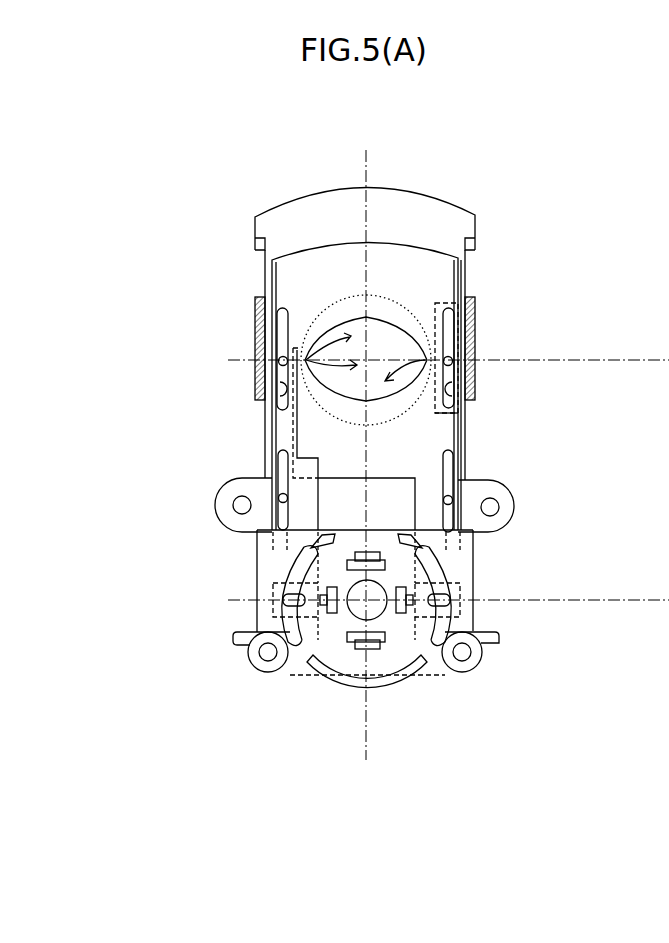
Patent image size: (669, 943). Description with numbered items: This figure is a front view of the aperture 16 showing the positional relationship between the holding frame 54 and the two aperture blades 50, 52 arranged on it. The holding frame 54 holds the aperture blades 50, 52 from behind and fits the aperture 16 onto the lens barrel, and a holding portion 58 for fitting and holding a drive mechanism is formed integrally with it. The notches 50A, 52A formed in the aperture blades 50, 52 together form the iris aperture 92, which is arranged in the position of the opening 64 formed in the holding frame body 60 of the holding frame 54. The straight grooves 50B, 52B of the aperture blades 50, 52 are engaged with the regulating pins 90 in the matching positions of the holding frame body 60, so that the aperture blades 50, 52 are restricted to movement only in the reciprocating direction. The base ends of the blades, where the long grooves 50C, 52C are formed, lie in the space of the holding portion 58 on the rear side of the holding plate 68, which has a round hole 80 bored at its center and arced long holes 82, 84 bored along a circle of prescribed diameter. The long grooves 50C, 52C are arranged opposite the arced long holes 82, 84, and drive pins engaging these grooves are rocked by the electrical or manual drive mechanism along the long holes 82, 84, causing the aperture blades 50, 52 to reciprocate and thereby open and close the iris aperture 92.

The aperture 16 is at (548, 192).
The holding frame 54 is at (398, 216).
The opening 64 is at (433, 330).
The iris aperture 92 is at (303, 360).
The notch 52A is at (300, 356).
The notch 50A is at (450, 354).
The regulating pins 90 is at (280, 361).
The straight grooves 52B is at (280, 396).
The straight grooves 50B is at (452, 391).
The holding frame body 60 is at (548, 426).
The holding portion 58 is at (184, 582).
The aperture blade 52 is at (282, 575).
The aperture blade 50 is at (455, 568).
The long groove 52C is at (290, 597).
The long groove 50C is at (468, 604).
The round hole 80 is at (377, 614).
The holding plate 68 is at (400, 632).
The arced long hole 82 is at (480, 633).
The arced long hole 84 is at (265, 660).